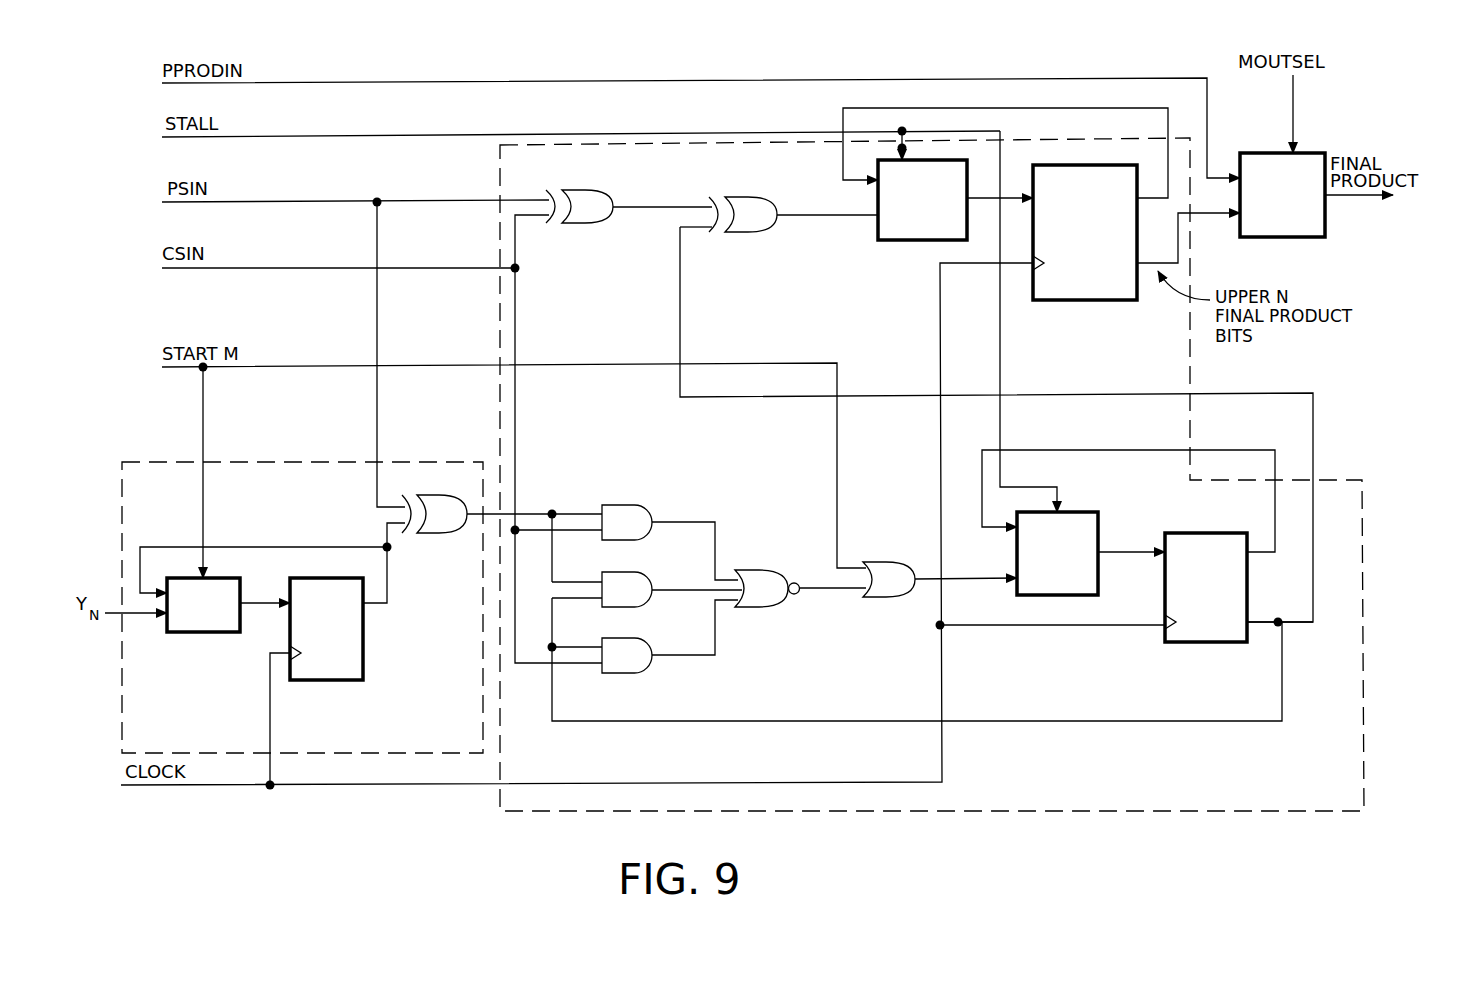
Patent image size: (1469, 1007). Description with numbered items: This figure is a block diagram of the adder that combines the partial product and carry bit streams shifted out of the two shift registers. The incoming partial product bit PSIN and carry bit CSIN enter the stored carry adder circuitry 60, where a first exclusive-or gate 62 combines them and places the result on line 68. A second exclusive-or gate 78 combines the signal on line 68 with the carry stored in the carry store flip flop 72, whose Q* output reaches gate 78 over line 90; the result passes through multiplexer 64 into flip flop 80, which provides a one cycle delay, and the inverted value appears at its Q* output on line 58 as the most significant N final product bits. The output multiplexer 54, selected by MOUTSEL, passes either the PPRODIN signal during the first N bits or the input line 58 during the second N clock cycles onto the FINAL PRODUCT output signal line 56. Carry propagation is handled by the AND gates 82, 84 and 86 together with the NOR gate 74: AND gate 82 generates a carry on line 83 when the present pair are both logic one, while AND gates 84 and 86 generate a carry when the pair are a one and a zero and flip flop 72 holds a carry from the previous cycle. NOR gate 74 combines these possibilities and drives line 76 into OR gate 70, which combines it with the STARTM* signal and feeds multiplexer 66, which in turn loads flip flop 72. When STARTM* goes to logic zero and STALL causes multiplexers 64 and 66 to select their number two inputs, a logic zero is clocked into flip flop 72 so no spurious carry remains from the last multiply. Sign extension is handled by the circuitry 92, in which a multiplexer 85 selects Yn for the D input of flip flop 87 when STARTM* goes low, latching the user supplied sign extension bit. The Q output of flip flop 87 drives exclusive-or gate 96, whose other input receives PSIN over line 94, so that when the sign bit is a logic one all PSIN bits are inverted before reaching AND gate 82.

The output multiplexer 54 is at (1325, 235).
The FINAL PRODUCT output signal line 56 is at (1350, 195).
The input line 58 is at (1178, 245).
The stored carry adder circuitry 60 is at (1245, 811).
The first exclusive-or gate 62 is at (583, 223).
The multiplexer 64 is at (905, 240).
The multiplexer 66 is at (1090, 595).
The line 68 is at (676, 205).
The OR gate 70 is at (880, 562).
The carry store flip flop 72 is at (1195, 642).
The NOR gate 74 is at (758, 607).
The line 76 is at (833, 590).
The second exclusive-or gate 78 is at (745, 232).
The flip flop 80 is at (1075, 300).
The AND gate 82 is at (615, 505).
The line 83 is at (715, 510).
The AND gate 84 is at (618, 572).
The multiplexer 85 is at (205, 632).
The AND gate 86 is at (622, 638).
The flip flop 87 is at (363, 625).
The line 90 is at (1295, 622).
The sign extension circuitry 92 is at (302, 607).
The partial sum input line 94 is at (377, 400).
The exclusive-or gate 96 is at (455, 533).